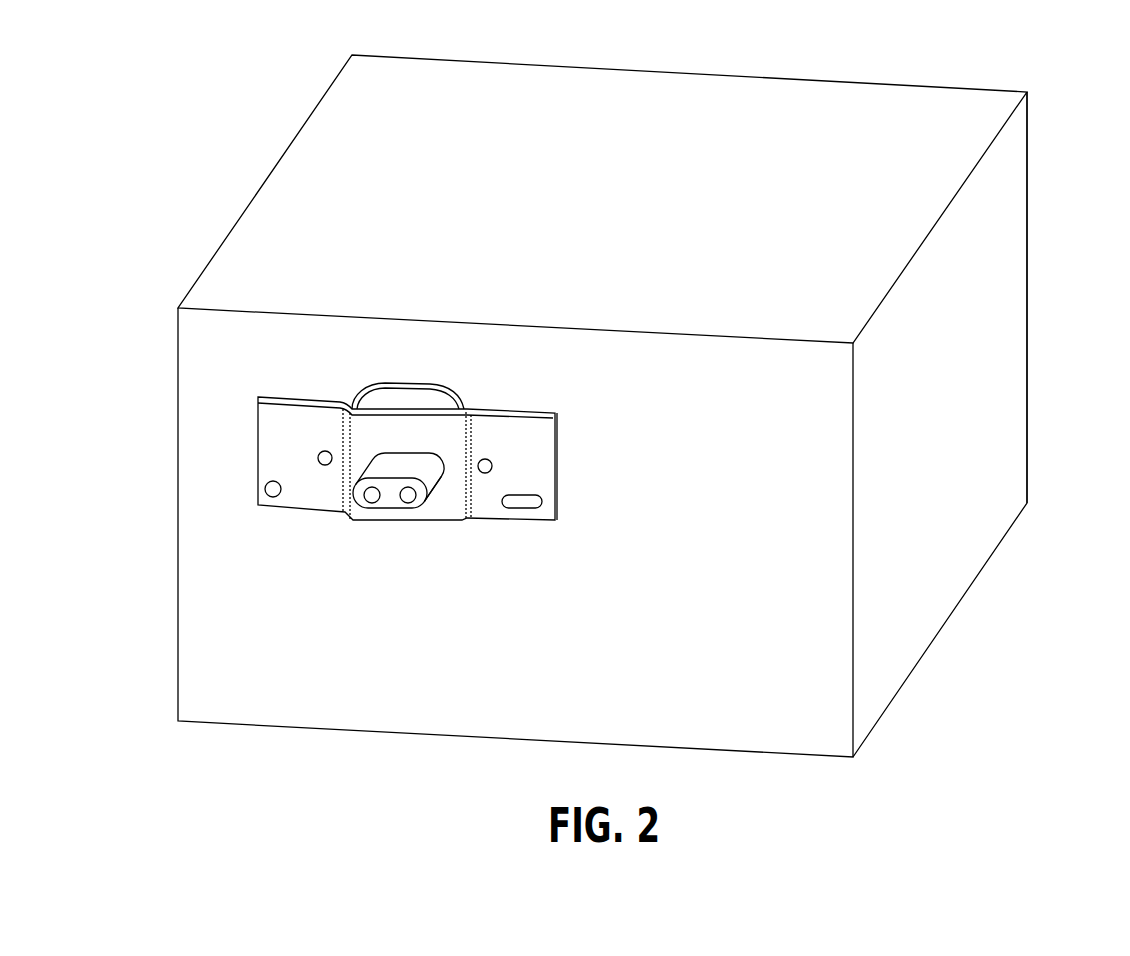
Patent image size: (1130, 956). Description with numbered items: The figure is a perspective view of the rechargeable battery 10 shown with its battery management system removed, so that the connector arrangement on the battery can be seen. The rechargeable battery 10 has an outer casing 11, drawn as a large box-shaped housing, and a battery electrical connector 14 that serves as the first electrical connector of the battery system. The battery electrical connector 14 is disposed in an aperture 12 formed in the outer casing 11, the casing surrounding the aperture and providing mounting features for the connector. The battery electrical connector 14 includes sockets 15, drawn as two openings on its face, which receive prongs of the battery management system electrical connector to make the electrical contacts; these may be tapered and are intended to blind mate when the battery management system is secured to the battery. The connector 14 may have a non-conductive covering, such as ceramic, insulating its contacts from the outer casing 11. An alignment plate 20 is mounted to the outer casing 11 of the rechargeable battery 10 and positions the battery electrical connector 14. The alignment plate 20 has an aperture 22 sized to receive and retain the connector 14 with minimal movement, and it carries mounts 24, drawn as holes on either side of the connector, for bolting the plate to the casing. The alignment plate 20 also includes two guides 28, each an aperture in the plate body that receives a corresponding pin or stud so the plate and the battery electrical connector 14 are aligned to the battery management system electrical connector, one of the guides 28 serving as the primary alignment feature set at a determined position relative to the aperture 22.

The rechargeable battery 10 is at (763, 128).
The outer casing 11 is at (998, 216).
The aperture 12 is at (403, 398).
The battery electrical connector 14 is at (410, 477).
The sockets 15 is at (370, 503).
The alignment plate 20 is at (540, 460).
The aperture 22 is at (437, 484).
The mounts 24 is at (325, 451).
The guides 28 is at (272, 497).